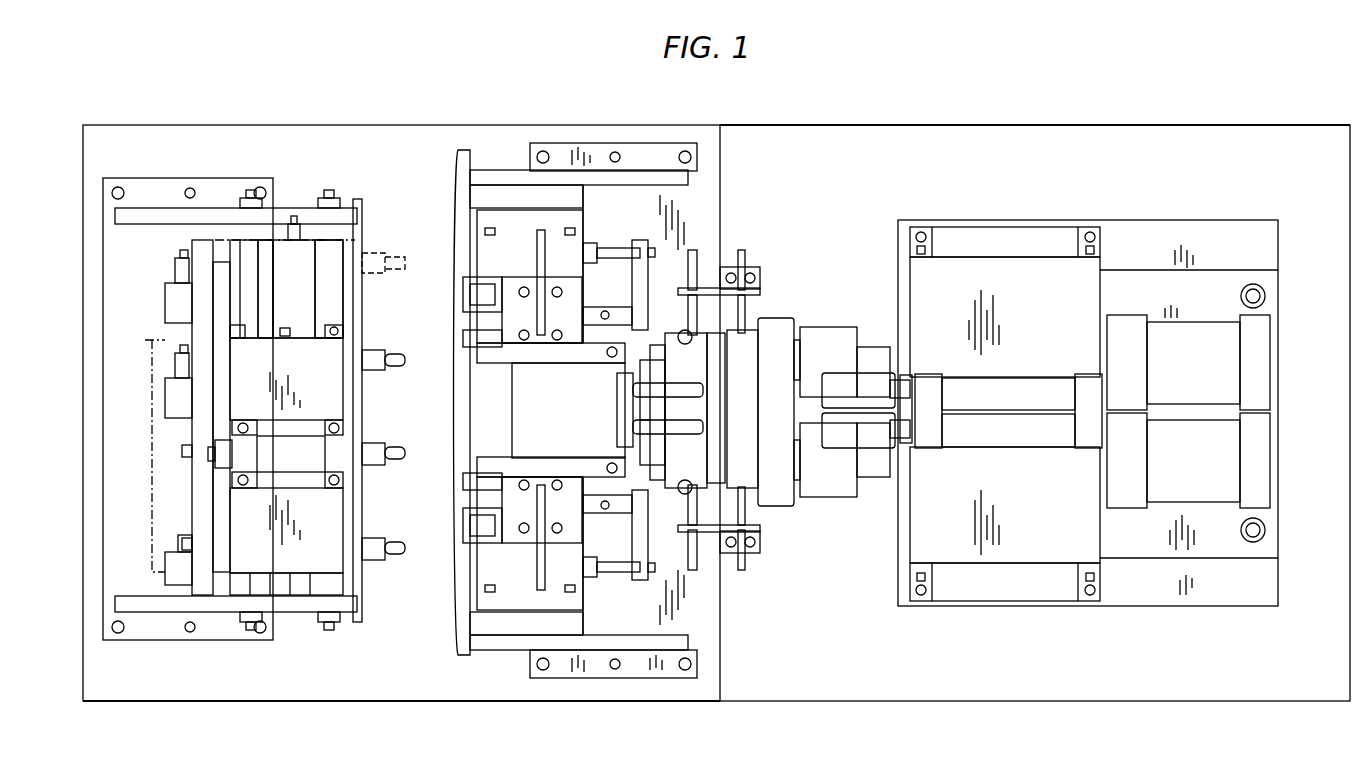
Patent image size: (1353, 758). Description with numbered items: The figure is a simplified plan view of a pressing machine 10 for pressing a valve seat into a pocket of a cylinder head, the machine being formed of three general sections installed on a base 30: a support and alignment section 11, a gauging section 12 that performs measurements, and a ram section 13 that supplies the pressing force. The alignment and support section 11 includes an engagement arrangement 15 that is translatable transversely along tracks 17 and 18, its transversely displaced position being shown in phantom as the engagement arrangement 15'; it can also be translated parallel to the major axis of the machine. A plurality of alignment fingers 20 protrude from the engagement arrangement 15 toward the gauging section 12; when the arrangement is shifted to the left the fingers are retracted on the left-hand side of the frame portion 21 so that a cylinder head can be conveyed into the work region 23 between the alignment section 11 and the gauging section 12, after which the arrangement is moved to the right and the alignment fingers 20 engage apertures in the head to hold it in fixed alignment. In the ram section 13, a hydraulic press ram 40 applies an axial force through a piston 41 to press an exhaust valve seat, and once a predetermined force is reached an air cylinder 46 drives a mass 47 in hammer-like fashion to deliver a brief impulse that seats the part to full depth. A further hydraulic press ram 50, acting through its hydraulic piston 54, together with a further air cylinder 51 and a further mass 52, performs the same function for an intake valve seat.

The pressing machine 10 is at (838, 644).
The support and alignment section 11 is at (230, 125).
The gauging section 12 is at (483, 125).
The ram section 13 is at (987, 125).
The engagement arrangement 15 is at (310, 466).
The engagement arrangement in transversely displaced phantom position 15' is at (230, 305).
The track 17 is at (264, 280).
The track 18 is at (322, 312).
The alignment fingers 20 is at (371, 364).
The frame portion 21 is at (358, 211).
The work region 23 is at (385, 695).
The base 30 is at (868, 142).
The hydraulic press ram 40 is at (912, 528).
The piston 41 is at (874, 472).
The air cylinder 46 is at (998, 440).
The mass 47 is at (838, 432).
The hydraulic press ram 50 is at (920, 275).
The air cylinder 51 is at (1047, 387).
The mass 52 is at (843, 384).
The hydraulic piston 54 is at (877, 357).